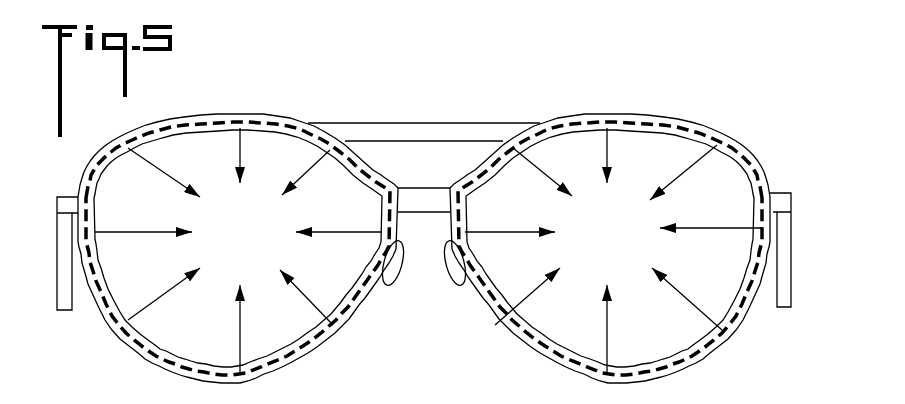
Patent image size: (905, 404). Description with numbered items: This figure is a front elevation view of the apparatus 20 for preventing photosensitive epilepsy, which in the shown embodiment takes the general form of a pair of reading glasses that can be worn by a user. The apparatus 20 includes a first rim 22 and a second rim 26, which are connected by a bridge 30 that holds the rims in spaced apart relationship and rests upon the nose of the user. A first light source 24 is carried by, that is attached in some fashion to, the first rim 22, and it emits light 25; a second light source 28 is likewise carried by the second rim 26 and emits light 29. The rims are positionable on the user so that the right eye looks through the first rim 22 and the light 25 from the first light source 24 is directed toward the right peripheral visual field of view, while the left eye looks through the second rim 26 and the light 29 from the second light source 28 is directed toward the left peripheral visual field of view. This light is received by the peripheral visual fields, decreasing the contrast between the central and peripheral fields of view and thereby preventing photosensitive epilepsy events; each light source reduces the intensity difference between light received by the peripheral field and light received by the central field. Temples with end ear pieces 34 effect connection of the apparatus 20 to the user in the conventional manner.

The apparatus 20 is at (718, 97).
The first rim 22 is at (130, 333).
The first light source 24 is at (176, 127).
The light 25 is at (238, 251).
The second rim 26 is at (723, 345).
The second light source 28 is at (641, 126).
The light 29 is at (614, 250).
The bridge 30 is at (421, 198).
The ear pieces 34 is at (62, 287).